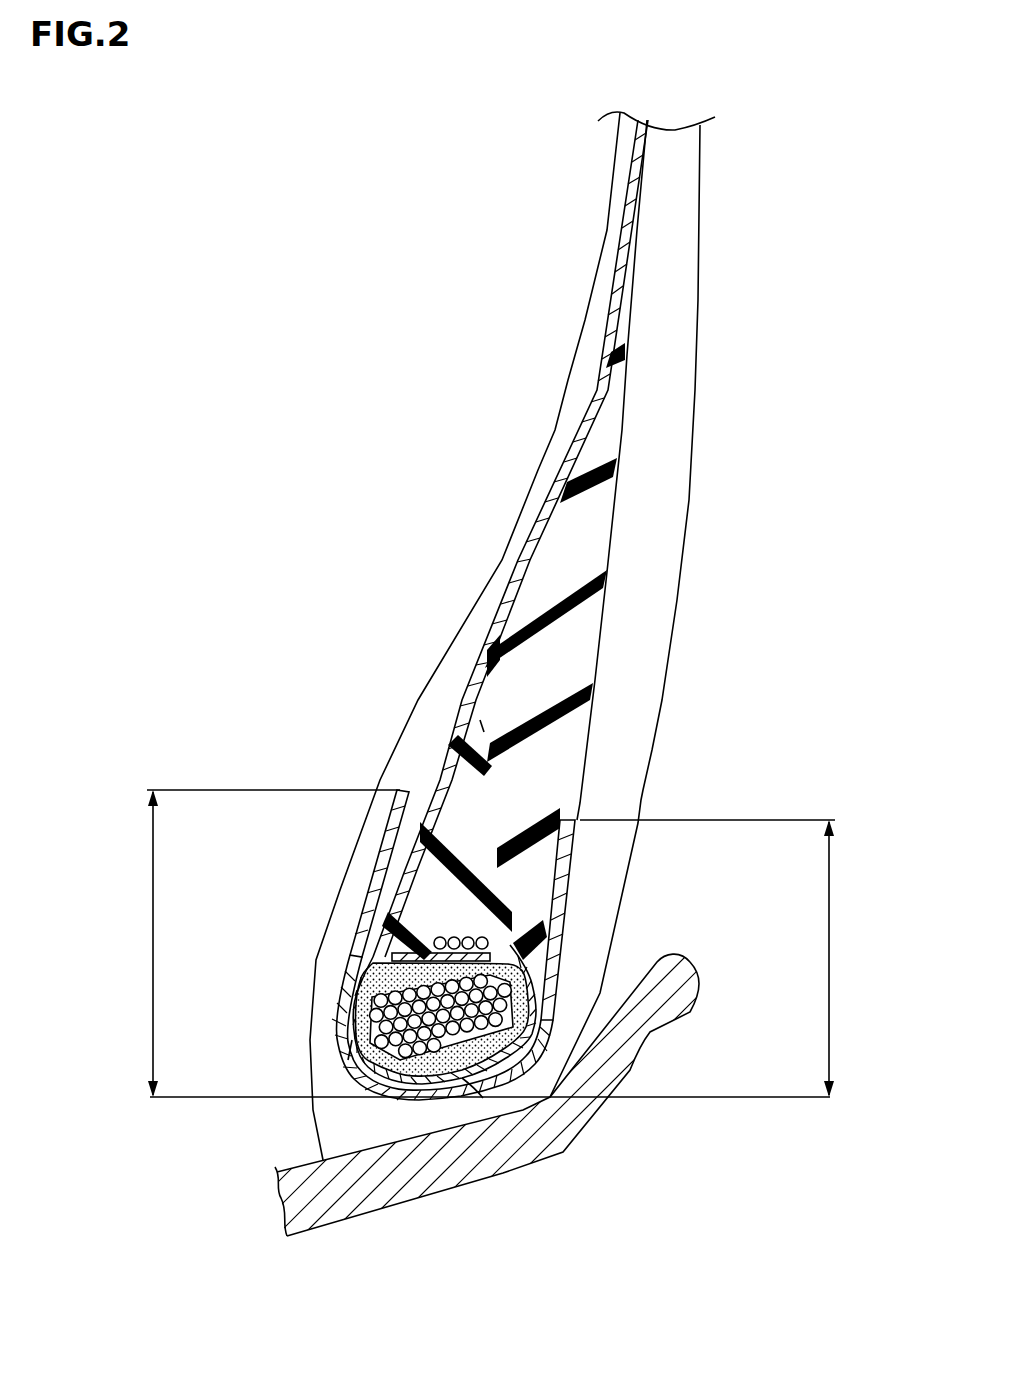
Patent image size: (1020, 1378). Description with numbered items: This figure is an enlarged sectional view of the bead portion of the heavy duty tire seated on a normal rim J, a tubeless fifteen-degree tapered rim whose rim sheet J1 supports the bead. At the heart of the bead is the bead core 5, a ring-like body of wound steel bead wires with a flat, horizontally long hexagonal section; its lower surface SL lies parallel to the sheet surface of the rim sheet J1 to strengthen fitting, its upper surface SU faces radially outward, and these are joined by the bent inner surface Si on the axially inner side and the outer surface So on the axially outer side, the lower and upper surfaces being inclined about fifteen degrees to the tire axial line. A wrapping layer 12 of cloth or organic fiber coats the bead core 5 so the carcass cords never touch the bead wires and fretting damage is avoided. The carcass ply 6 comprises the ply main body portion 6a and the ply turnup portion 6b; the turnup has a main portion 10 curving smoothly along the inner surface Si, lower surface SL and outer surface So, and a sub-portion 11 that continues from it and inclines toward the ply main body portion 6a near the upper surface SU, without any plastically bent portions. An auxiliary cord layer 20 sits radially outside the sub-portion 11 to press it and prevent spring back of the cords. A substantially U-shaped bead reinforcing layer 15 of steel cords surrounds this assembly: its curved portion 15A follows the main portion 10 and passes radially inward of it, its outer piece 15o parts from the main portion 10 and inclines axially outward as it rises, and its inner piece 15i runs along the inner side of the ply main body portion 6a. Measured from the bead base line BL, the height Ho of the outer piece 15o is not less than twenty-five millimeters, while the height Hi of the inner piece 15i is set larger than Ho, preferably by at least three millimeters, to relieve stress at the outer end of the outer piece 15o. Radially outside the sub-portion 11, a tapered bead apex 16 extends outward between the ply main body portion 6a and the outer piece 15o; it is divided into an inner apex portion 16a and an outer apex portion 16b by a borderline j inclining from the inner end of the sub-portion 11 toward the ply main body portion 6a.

The carcass ply 6 is at (479, 602).
The ply main body portion 6a is at (565, 460).
The ply turnup portion 6b is at (483, 1100).
The main portion 10 is at (520, 1200).
The bead apex 16 is at (400, 651).
The inner apex portion 16a is at (485, 700).
The outer apex portion 16b is at (573, 545).
The borderline j is at (480, 720).
The auxiliary cord layer 20 is at (456, 940).
The bead reinforcing layer 15 is at (480, 1039).
The inner piece 15i is at (382, 850).
The outer piece 15o is at (565, 852).
The curved portion 15A is at (517, 1062).
The upper surface SU is at (485, 928).
The sub-portion 11 is at (387, 977).
The bead core 5 is at (395, 1032).
The wrapping layer 12 is at (358, 1068).
The outer surface So is at (520, 1008).
The inner surface Si is at (387, 1090).
The radial directional height of inner piece Hi is at (269, 943).
The radial directional height of outer piece Ho is at (714, 958).
The bead base line BL is at (775, 1100).
The lower surface SL is at (437, 1095).
The normal rim J is at (510, 1139).
The rim sheet J1 is at (372, 1195).